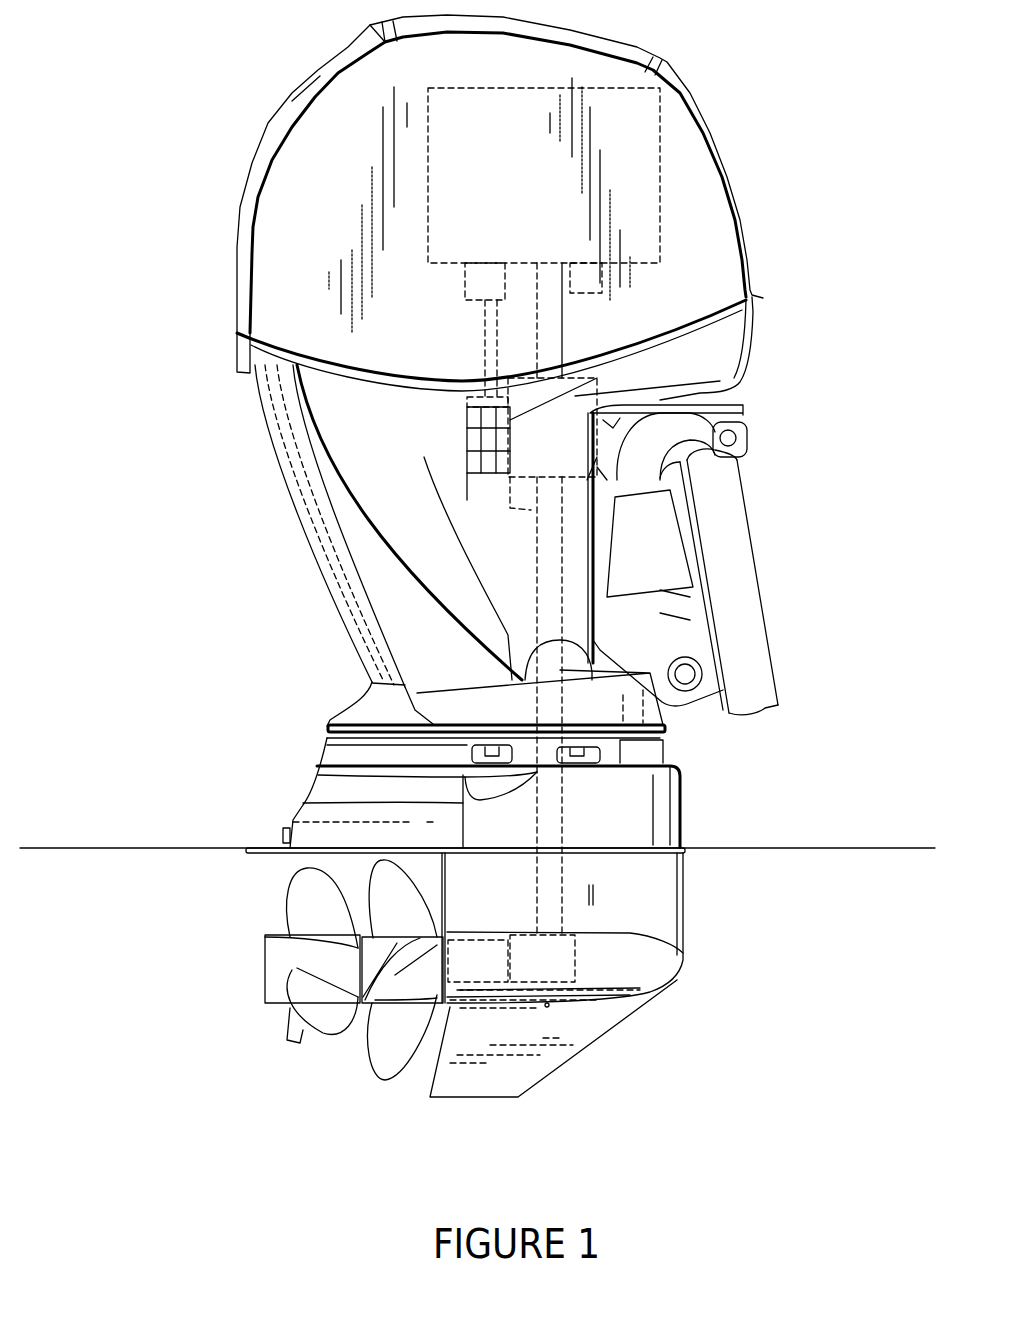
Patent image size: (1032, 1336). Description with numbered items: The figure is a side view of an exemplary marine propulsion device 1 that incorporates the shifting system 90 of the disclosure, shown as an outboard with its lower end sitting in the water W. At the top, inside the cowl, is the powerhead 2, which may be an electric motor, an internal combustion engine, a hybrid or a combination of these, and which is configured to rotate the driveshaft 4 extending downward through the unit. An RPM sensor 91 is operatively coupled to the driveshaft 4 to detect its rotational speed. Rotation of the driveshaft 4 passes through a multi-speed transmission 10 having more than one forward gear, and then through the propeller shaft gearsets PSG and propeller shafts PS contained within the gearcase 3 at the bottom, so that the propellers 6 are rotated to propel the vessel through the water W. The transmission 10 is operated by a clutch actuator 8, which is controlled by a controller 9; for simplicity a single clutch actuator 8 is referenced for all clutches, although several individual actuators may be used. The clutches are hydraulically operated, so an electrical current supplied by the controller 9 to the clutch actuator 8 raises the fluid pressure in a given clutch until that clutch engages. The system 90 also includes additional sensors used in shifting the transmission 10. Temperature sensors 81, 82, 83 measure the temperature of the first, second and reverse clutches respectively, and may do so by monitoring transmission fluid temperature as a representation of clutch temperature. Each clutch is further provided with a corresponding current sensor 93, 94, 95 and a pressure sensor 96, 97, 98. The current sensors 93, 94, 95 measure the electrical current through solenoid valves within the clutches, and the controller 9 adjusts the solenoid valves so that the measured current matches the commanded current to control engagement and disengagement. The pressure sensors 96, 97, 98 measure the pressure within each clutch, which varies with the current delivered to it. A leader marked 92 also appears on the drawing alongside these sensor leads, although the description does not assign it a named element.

The propulsion device 1 is at (187, 158).
The powerhead 2 is at (541, 194).
The gearcase 3 is at (671, 1032).
The driveshaft 4 is at (555, 327).
The propeller 6 is at (293, 1042).
The clutch actuator 8 is at (490, 340).
The controller 9 is at (476, 296).
The transmission 10 is at (722, 352).
The temperature sensor 81 is at (485, 405).
The temperature sensor 82 is at (470, 407).
The temperature sensor 83 is at (478, 462).
The system 90 is at (224, 112).
The RPM sensor 91 is at (590, 275).
The wire 92 is at (500, 500).
The current sensor 93 is at (467, 418).
The current sensor 94 is at (468, 445).
The current sensor 95 is at (468, 462).
The pressure sensor 96 is at (510, 420).
The pressure sensor 97 is at (510, 438).
The pressure sensor 98 is at (510, 460).
The water W is at (869, 923).
The propeller shaft PS is at (477, 963).
The propeller shaft gearset PSG is at (563, 970).